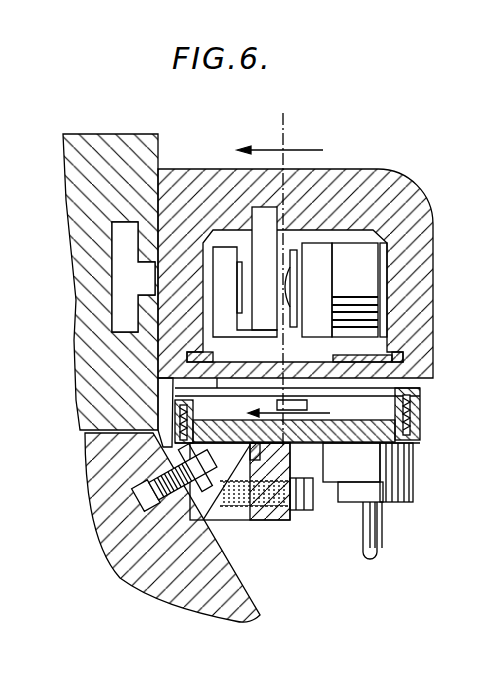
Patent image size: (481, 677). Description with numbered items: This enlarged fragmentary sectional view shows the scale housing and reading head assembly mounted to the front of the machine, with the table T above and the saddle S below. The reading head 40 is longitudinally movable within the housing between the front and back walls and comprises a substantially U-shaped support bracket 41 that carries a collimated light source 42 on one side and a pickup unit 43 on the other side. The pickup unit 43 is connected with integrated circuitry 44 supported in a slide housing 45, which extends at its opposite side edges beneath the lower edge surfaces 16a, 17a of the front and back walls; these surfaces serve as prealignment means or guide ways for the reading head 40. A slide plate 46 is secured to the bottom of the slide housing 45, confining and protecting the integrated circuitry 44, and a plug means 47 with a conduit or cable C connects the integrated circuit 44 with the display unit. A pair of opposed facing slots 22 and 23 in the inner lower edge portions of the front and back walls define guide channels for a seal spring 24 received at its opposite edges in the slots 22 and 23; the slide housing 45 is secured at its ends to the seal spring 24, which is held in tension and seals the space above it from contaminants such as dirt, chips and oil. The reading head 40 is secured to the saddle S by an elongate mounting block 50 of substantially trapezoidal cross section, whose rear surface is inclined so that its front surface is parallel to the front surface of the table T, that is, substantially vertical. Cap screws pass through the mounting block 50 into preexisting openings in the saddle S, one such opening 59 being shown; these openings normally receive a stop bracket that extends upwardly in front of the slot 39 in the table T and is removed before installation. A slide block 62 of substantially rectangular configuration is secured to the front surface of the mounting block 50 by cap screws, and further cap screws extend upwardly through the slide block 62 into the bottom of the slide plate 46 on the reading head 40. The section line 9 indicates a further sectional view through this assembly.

The section line 9- 9 is at (283, 279).
The lower edge surface of front wall 16a is at (420, 388).
The lower edge surface of back wall 17a is at (175, 385).
The slot 22 is at (403, 354).
The slot 23 is at (213, 356).
The seal spring 24 is at (353, 358).
The slot 39 is at (112, 250).
The reading head 40 is at (400, 178).
The support bracket 41 is at (320, 250).
The collimated light source 42 is at (294, 300).
The pickup unit 43 is at (239, 280).
The integrated circuitry 44 is at (415, 410).
The slide housing 45 is at (418, 430).
The slide plate 46 is at (380, 443).
The plug means 47 is at (408, 494).
The mounting block 50 is at (245, 520).
The opening 59 is at (165, 510).
The slide block 62 is at (293, 512).
The table T is at (108, 134).
The saddle S is at (246, 588).
The cable C is at (383, 545).